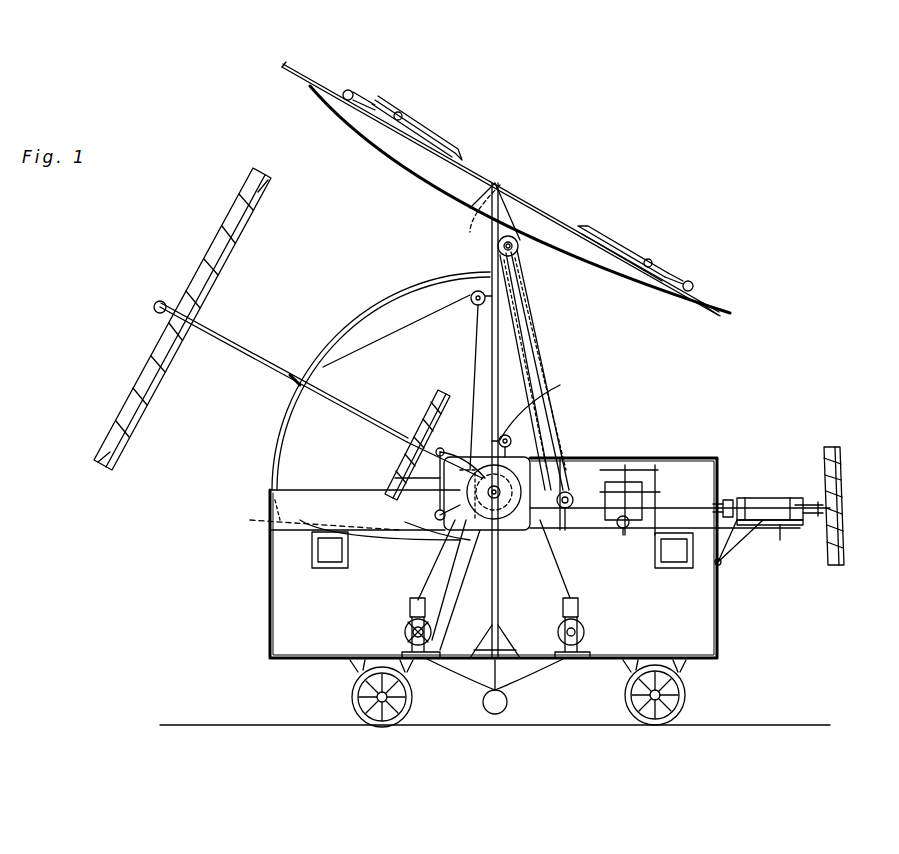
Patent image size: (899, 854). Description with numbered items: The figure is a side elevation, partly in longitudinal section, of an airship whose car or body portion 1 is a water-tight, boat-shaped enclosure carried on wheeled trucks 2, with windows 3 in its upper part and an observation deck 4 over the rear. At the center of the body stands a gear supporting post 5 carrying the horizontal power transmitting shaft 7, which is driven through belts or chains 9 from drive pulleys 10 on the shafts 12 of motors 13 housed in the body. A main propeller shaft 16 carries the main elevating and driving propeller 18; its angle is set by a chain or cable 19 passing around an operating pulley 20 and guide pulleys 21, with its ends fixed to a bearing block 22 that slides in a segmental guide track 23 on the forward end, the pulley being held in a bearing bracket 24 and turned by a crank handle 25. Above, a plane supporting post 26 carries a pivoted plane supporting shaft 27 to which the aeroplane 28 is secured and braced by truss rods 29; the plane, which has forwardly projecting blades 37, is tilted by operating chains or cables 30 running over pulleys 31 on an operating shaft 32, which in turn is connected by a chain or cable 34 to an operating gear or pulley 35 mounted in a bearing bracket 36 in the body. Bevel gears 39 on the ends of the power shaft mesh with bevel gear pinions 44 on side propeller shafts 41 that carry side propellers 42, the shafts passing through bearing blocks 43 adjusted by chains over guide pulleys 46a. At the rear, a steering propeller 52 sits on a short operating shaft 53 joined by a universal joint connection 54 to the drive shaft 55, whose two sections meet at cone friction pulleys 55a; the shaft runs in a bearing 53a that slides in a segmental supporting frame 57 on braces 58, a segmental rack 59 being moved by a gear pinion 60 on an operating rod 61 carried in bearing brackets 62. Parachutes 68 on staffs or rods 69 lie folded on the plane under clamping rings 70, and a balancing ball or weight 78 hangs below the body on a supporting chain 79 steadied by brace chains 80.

The car or body portion 1 is at (282, 622).
The wheeled trucks 2 is at (380, 727).
The windows 3 is at (330, 560).
The observation deck 4 is at (690, 458).
The gear supporting post 5 is at (480, 605).
The power transmitting shaft 7 is at (505, 488).
The belts or chains 9 is at (432, 562).
The drive pulleys 10 is at (404, 628).
The motor shafts 12 is at (512, 218).
The motors 13 is at (410, 602).
The main propeller shaft 16 is at (224, 342).
The main elevating and driving propeller 18 is at (150, 330).
The chain or cable 19 is at (405, 340).
The operating pulley 20 is at (410, 566).
The guide pulleys 21 is at (470, 290).
The bearing block 22 is at (280, 402).
The segmental guide track 23 is at (345, 330).
The bearing bracket 24 is at (490, 592).
The crank handle 25 is at (452, 560).
The plane supporting post 26 is at (474, 306).
The plane supporting shaft 27 is at (500, 192).
The aeroplane 28 is at (405, 150).
The truss rods 29 is at (425, 192).
The operating chains or cables 30 is at (470, 212).
The pulleys 31 is at (525, 240).
The operating shaft 32 is at (518, 258).
The chain or cable 34 is at (538, 395).
The operating gear or pulley 35 is at (598, 530).
The bearing bracket 36 is at (560, 458).
The forwardly projecting blades 37 is at (318, 88).
The bevel gears 39 is at (515, 442).
The side propeller shafts 41 is at (442, 450).
The side propellers 42 is at (432, 405).
The bearing blocks 43 is at (395, 470).
The bevel gear pinions 44 is at (438, 490).
The guide pulleys 46a is at (548, 418).
The steering propeller 52 is at (842, 480).
The operating shaft 53 is at (752, 498).
The bearing 53a is at (795, 498).
The universal joint connection 54 is at (730, 498).
The drive shaft 55 is at (604, 458).
The cone friction pulleys 55a is at (632, 480).
The supporting frame 57 is at (752, 528).
The braces 58 is at (722, 565).
The segmental rack 59 is at (780, 540).
The gear pinion 60 is at (795, 528).
The operating rod 61 is at (630, 530).
The bearing brackets 62 is at (566, 522).
The parachutes 68 is at (420, 130).
The staffs or rods 69 is at (356, 104).
The clamping rings 70 is at (400, 114).
The balancing ball or weight 78 is at (507, 702).
The supporting chain 79 is at (490, 694).
The brace chains 80 is at (450, 672).